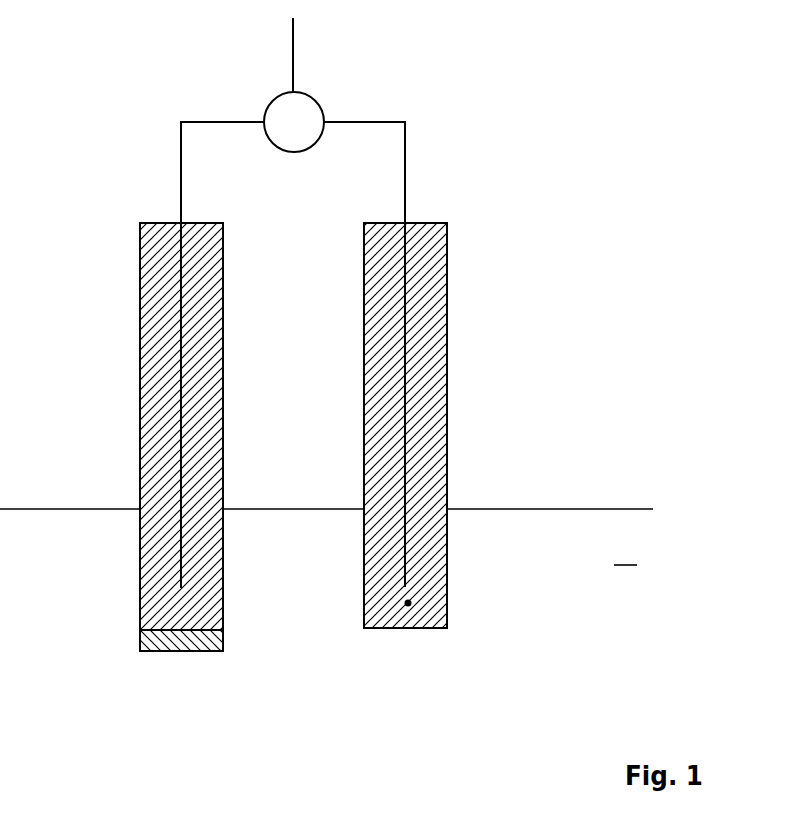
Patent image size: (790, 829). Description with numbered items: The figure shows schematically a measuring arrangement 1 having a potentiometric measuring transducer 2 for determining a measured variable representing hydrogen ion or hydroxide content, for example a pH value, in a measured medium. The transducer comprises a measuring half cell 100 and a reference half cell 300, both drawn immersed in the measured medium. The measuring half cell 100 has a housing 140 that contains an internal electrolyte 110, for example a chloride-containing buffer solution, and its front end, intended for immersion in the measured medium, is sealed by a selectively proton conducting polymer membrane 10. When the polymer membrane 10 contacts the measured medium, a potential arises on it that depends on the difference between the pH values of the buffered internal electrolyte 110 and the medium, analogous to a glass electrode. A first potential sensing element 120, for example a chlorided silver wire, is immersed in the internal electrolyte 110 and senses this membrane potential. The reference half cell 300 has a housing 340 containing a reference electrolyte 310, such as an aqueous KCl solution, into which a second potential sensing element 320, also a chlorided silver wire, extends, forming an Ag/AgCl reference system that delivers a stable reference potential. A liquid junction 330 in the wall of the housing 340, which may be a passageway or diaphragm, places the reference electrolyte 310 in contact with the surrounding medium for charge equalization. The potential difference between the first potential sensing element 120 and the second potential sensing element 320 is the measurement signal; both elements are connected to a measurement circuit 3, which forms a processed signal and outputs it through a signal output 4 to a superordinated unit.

The measuring arrangement 1 is at (402, 88).
The potentiometric measuring transducer 2 is at (298, 676).
The measurement circuit 3 is at (272, 101).
The signal output 4 is at (293, 63).
The polymer membrane 10 is at (143, 642).
The measuring half cell 100 is at (138, 408).
The internal electrolyte 110 is at (165, 335).
The first potential sensing element 120 is at (180, 407).
The housing 140 is at (143, 568).
The reference half cell 300 is at (463, 395).
The reference electrolyte 310 is at (427, 332).
The second potential sensing element 320 is at (407, 413).
The liquid junction 330 is at (408, 603).
The housing 340 is at (450, 557).